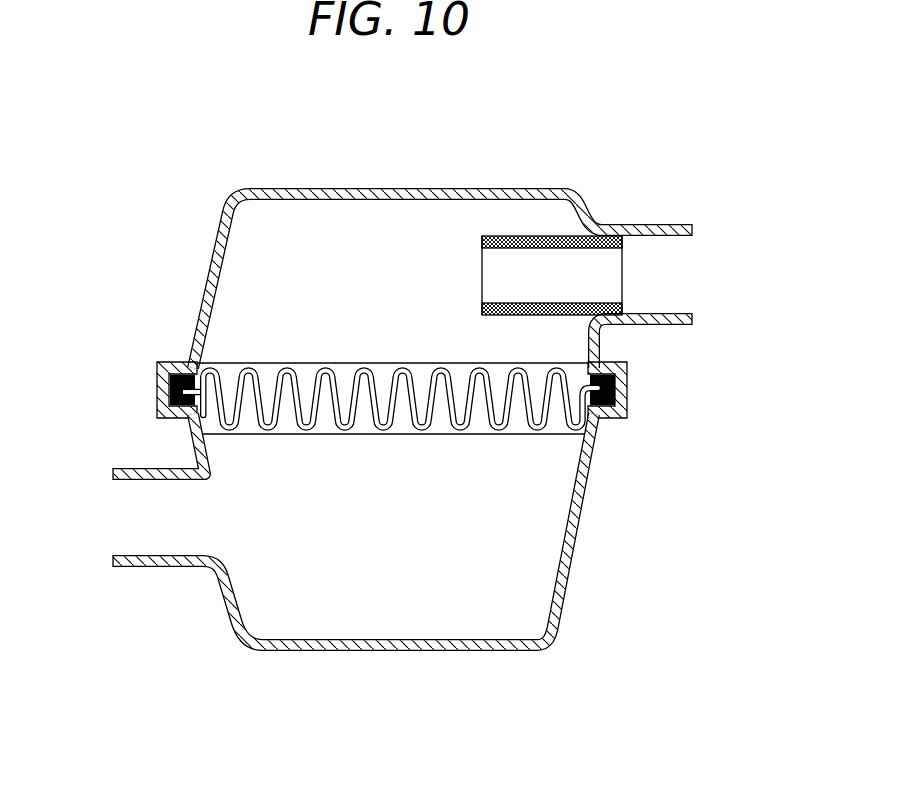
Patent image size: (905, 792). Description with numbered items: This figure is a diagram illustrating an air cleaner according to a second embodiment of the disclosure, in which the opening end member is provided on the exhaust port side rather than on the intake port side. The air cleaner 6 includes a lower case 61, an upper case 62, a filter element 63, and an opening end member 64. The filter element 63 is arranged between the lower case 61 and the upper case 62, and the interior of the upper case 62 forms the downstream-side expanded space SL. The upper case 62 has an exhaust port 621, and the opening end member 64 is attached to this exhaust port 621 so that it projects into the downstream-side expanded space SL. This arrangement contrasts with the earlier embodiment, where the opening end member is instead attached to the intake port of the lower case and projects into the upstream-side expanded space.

The air cleaner 6 is at (385, 728).
The lower case 61 is at (597, 573).
The upper case 62 is at (490, 168).
The exhaust port 621 is at (678, 200).
The filter element 63 is at (503, 463).
The opening end member 64 is at (587, 285).
The downstream-side expanded space SL is at (360, 282).